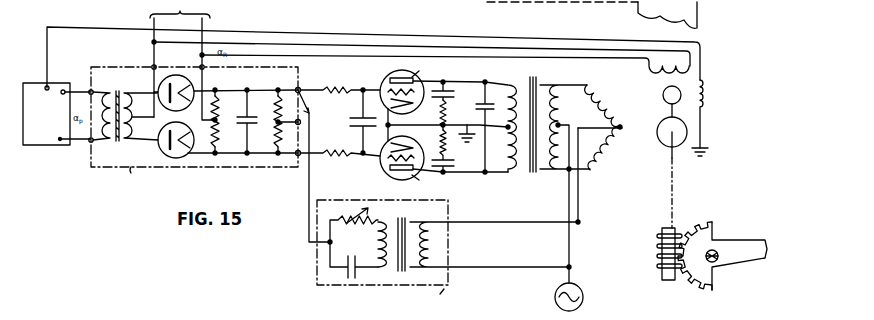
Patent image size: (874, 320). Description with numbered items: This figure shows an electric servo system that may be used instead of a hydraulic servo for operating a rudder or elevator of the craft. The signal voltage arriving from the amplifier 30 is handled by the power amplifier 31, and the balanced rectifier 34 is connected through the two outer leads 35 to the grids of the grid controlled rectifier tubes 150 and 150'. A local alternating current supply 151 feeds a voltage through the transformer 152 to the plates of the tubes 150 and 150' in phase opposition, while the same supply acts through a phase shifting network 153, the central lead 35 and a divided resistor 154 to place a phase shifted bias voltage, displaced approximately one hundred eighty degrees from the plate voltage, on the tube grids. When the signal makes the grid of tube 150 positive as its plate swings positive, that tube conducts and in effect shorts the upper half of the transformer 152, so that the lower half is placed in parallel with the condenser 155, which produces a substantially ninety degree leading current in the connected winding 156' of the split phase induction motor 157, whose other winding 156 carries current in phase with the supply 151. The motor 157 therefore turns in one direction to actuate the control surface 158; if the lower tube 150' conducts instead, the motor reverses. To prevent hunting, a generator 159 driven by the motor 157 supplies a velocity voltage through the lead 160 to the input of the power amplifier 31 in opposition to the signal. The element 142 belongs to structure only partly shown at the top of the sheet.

The amplifier 30 is at (184, 60).
The power amplifier 31 is at (50, 147).
The balanced rectifier 34 is at (117, 165).
The leads 35 is at (313, 165).
The coupling element 142 is at (552, 3).
The grid controlled rectifier tube 150 is at (427, 89).
The grid controlled rectifier tube 150' is at (428, 162).
The local alternating current supply 151 is at (585, 239).
The transformer 152 is at (533, 72).
The network 153 is at (446, 252).
The divided resistor 154 is at (272, 100).
The condenser 155 is at (484, 101).
The winding 156 is at (602, 101).
The winding 156' is at (607, 154).
The split phase induction motor 157 is at (661, 139).
The control surface 158 is at (741, 249).
The generator 159 is at (665, 91).
The lead 160 is at (394, 36).